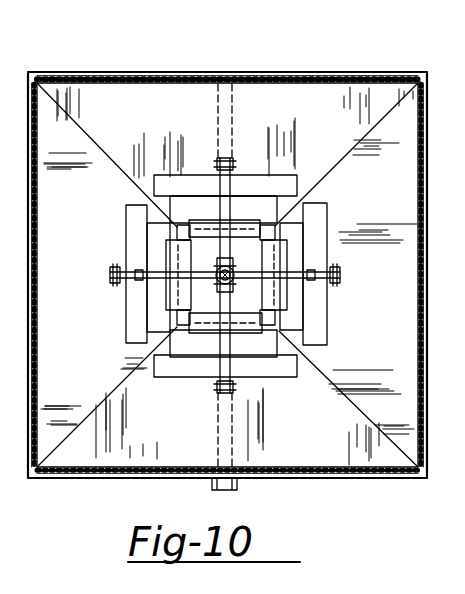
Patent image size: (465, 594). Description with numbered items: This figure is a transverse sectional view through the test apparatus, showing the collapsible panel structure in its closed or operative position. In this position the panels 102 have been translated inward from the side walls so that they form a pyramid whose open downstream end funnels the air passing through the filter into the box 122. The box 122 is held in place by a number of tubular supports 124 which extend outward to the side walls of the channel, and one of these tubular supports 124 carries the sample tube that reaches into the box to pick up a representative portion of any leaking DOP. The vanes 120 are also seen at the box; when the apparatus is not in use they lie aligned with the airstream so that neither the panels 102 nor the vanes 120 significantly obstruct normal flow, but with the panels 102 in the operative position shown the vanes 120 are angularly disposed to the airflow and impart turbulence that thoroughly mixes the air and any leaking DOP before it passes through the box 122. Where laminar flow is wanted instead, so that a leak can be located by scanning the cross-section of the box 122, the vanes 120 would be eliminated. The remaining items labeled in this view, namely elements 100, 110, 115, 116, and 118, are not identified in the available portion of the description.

The mounting assembly 100 is at (338, 72).
The panels 102 is at (173, 116).
The hub 110 is at (290, 300).
The horizontal shaft 115 is at (216, 271).
The collar bearing 116 is at (213, 264).
The nuts / clamps 118 is at (230, 190).
The vanes 120 is at (306, 334).
The box 122 is at (270, 346).
The tubular supports 124 is at (222, 427).